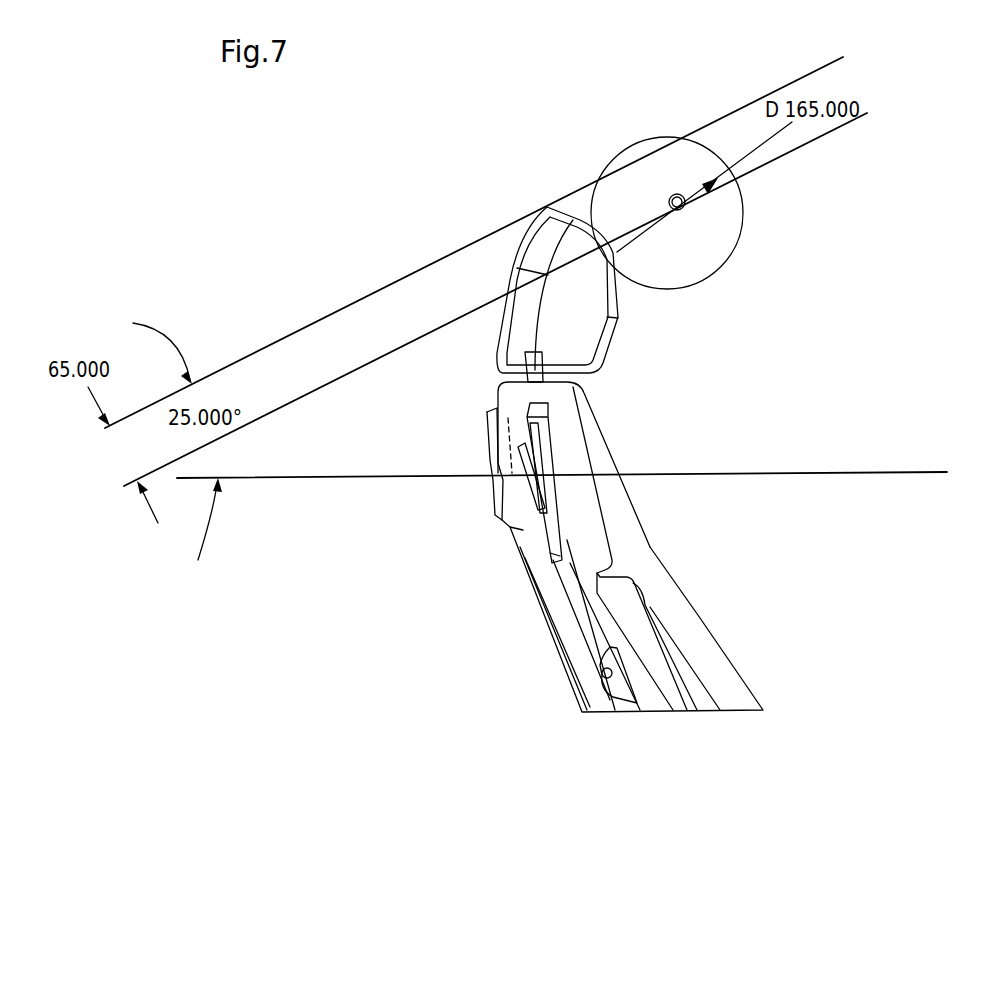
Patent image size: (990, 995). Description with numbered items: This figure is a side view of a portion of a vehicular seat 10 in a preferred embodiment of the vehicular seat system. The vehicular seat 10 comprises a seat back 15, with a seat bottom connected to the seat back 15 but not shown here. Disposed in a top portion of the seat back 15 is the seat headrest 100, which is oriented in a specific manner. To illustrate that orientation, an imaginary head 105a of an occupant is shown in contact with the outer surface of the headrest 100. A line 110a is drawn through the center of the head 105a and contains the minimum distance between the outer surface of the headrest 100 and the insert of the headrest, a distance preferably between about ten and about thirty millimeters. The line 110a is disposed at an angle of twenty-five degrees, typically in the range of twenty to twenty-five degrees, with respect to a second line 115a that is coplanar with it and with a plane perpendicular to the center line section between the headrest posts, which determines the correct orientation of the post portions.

The vehicular seat 10 is at (663, 547).
The seat back 15 is at (727, 640).
The seat headrest 100 is at (642, 338).
The imaginary head 105a is at (733, 250).
The line 110a is at (805, 147).
The second line 115a is at (892, 472).